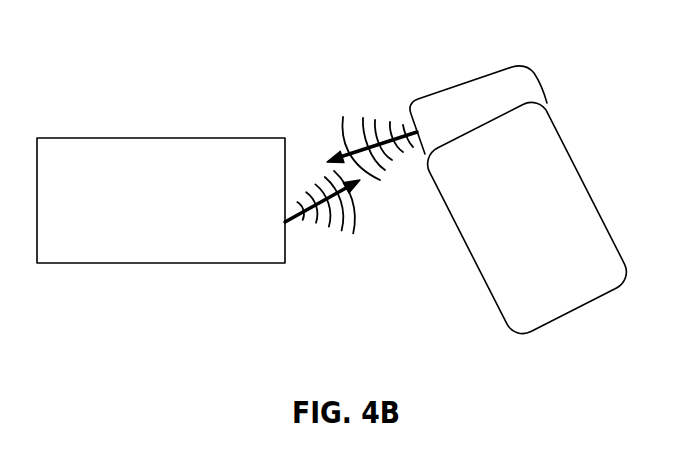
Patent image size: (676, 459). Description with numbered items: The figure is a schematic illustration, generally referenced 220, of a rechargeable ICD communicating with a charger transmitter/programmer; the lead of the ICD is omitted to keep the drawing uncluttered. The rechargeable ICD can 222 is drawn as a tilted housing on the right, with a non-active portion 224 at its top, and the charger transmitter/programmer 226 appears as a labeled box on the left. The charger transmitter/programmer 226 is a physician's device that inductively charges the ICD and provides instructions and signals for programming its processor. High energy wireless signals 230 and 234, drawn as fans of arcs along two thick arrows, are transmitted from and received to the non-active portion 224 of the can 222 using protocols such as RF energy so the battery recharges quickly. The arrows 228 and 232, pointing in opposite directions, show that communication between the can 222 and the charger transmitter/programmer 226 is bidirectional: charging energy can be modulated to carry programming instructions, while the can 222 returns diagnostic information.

The rechargeable ICD communicating with a charger transmitter/programmer 220 is at (167, 328).
The rechargeable ICD can 222 is at (557, 108).
The non-active portion 224 is at (450, 97).
The charger transmitter/programmer 226 is at (110, 138).
The arrow 228 is at (338, 152).
The high energy wireless signals 230 is at (368, 118).
The arrow 232 is at (351, 192).
The high energy wireless signals 234 is at (328, 230).